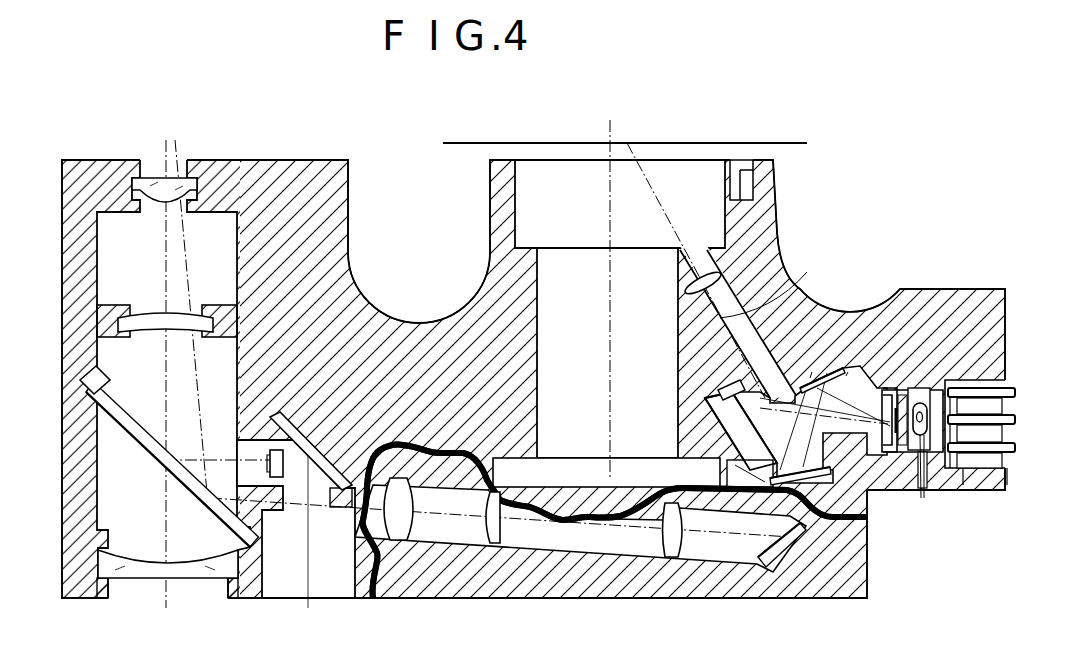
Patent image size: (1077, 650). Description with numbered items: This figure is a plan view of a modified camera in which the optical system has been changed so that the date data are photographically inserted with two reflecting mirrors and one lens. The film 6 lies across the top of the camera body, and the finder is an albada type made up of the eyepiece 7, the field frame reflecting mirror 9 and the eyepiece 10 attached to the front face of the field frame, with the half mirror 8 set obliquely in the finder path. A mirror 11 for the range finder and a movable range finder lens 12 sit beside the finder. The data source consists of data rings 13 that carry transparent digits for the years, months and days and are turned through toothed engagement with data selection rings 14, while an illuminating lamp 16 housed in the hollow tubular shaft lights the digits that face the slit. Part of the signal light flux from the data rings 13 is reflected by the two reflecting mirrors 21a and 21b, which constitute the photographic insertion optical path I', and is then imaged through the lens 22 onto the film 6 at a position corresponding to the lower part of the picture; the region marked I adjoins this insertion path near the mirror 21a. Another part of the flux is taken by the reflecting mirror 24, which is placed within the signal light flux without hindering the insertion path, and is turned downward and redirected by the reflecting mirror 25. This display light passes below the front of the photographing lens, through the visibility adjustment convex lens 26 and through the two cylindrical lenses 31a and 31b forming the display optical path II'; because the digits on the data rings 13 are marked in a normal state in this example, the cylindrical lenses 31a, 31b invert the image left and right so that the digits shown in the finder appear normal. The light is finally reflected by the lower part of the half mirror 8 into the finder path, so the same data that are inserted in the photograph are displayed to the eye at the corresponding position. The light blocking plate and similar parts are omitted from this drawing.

The film 6 is at (528, 143).
The eyepiece of view finder 7 is at (136, 570).
The half mirror 8 is at (140, 440).
The field frame reflecting mirror 9 is at (145, 323).
The eyepiece of field frame 10 is at (152, 199).
The range finder mirror 11 is at (307, 436).
The movable range finder lens 12 is at (270, 463).
The data rings 13 is at (893, 388).
The data selection rings 14 is at (1012, 433).
The illuminating lamp 16 is at (922, 403).
The reflecting mirror 21a is at (830, 372).
The reflecting mirror 21b is at (833, 478).
The lens 22 is at (706, 278).
The reflecting mirror 24 is at (720, 396).
The reflecting mirror 25 is at (780, 565).
The visibility adjustment convex lens 26 is at (393, 520).
The cylindrical lens 31a is at (670, 557).
The cylindrical lens 31b is at (493, 545).
The image plane I is at (856, 387).
The photographic insertion optical path I' is at (769, 284).
The display optical path II' is at (717, 461).